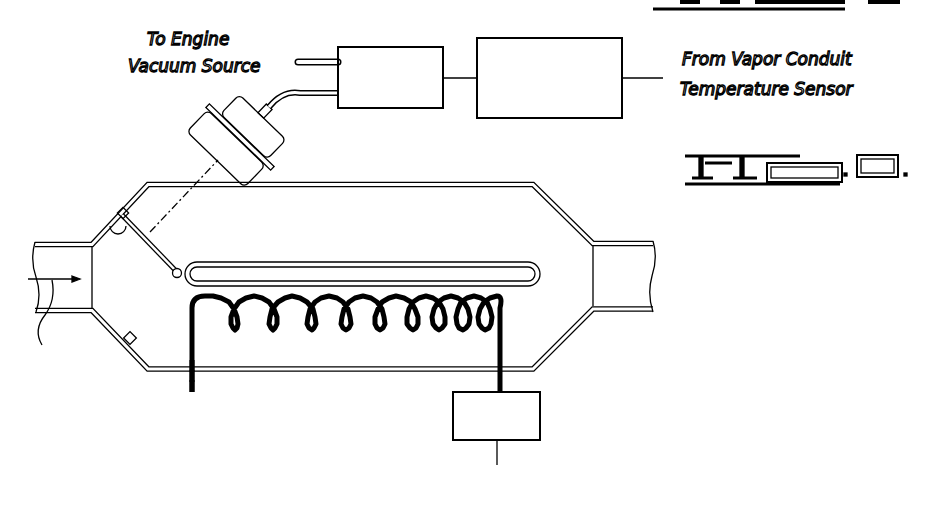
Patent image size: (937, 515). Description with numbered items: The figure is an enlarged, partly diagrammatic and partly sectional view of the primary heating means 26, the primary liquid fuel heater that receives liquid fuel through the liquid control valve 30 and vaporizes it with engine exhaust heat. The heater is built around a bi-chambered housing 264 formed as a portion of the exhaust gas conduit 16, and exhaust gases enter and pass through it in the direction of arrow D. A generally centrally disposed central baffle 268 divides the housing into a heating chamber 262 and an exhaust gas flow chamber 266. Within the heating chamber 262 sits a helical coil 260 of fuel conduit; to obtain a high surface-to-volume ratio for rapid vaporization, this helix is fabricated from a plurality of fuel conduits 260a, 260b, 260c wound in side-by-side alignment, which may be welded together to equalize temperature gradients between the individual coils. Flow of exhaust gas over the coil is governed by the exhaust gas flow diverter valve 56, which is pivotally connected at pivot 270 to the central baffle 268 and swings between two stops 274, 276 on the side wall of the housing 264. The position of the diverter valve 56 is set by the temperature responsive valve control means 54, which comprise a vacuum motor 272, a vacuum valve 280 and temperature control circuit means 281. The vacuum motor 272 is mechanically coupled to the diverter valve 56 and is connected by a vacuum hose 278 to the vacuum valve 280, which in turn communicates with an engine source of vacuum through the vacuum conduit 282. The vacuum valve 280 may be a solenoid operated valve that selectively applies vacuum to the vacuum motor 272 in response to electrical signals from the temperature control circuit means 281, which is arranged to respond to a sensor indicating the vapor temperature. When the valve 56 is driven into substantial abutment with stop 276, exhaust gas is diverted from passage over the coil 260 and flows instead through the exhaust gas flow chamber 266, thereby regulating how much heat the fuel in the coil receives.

The exhaust gas conduit 16 is at (58, 242).
The primary heating means 26 is at (624, 212).
The liquid control valve 30 is at (530, 408).
The temperature responsive valve control means 54 is at (207, 134).
The exhaust gas flow diverter valve 56 is at (119, 210).
The helical coil 260 is at (390, 345).
The fuel conduit 260a is at (196, 392).
The fuel conduit 260b is at (188, 392).
The fuel conduit 260c is at (192, 398).
The heating chamber 262 is at (556, 332).
The bi-chambered housing 264 is at (436, 182).
The exhaust gas flow chamber 266 is at (500, 237).
The central baffle 268 is at (535, 265).
The pivotal connection 270 is at (183, 268).
The vacuum motor 272 is at (207, 128).
The stop 274 is at (138, 206).
The stop 276 is at (128, 348).
The vacuum hose 278 is at (330, 98).
The vacuum valve 280 is at (400, 47).
The temperature control circuit means 281 is at (558, 38).
The vacuum conduit 282 is at (320, 56).
The direction of exhaust gas flow D is at (54, 315).